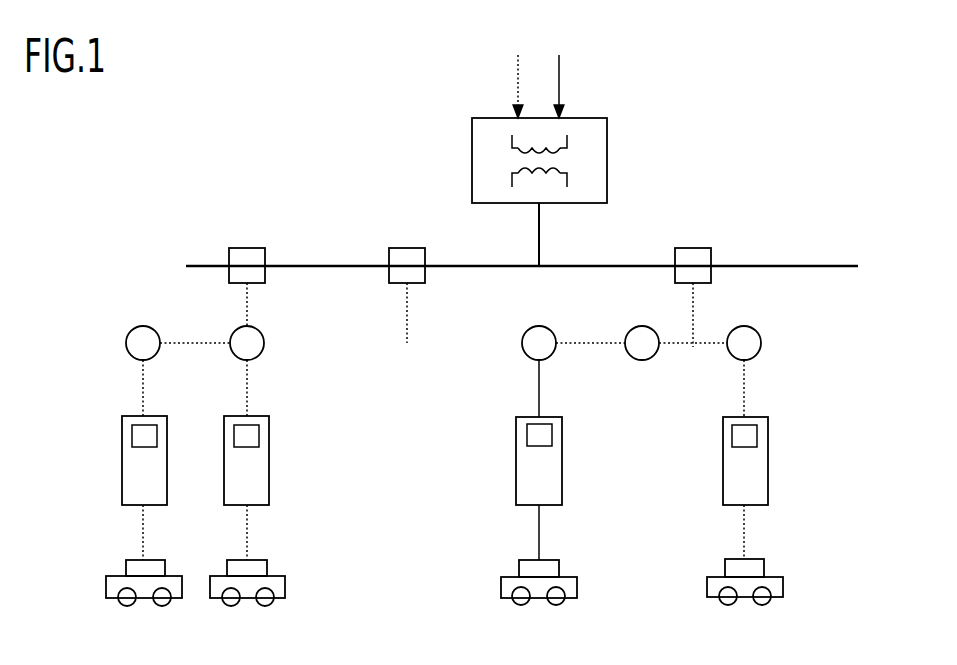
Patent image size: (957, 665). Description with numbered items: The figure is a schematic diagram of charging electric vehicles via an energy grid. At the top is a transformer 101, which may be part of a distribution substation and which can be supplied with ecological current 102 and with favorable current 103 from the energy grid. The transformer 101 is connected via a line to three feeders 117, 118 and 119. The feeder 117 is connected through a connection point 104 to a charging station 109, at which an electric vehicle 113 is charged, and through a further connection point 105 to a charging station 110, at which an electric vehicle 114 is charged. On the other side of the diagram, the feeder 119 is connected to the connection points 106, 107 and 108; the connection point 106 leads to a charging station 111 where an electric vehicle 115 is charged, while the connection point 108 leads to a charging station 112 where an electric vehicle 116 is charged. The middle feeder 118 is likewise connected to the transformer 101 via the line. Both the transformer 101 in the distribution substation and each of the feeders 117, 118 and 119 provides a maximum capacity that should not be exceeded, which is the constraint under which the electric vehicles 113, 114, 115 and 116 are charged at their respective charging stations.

The transformer 101 is at (607, 148).
The ecological current 102 is at (513, 74).
The favorable current 103 is at (563, 75).
The connection point 104 is at (127, 343).
The connection point 105 is at (264, 343).
The connection point 106 is at (523, 343).
The connection point 107 is at (643, 361).
The connection point 108 is at (762, 343).
The charging station 109 is at (122, 462).
The charging station 110 is at (269, 462).
The charging station 111 is at (516, 460).
The charging station 112 is at (768, 462).
The electric vehicle 113 is at (106, 588).
The electric vehicle 114 is at (285, 588).
The electric vehicle 115 is at (501, 590).
The electric vehicle 116 is at (783, 588).
The feeder 117 is at (250, 248).
The feeder 118 is at (410, 248).
The feeder 119 is at (695, 248).